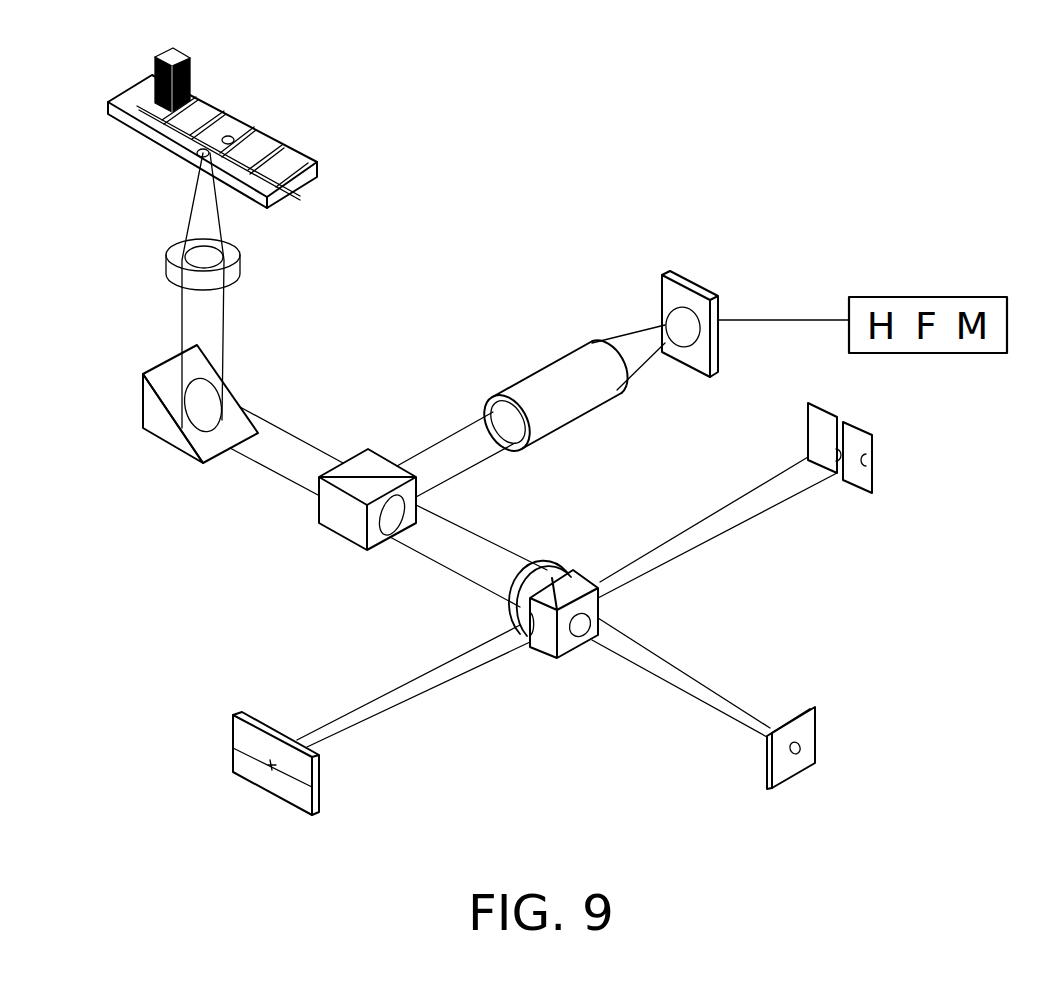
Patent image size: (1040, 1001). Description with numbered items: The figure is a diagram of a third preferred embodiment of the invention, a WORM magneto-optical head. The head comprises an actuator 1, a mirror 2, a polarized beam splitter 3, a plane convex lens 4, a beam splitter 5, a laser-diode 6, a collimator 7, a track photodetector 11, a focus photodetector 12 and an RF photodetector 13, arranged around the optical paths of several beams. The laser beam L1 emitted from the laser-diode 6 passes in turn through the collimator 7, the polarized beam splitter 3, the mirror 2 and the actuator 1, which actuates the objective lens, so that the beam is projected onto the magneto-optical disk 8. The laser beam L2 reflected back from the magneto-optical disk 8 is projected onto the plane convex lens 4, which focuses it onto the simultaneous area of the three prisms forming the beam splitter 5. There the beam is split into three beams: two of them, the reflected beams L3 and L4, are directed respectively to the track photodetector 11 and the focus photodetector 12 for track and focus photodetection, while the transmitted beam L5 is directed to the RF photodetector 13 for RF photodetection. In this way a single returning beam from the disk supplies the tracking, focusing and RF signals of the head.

The actuator 1 is at (175, 255).
The mirror 2 is at (150, 408).
The polarized beam splitter 3 is at (367, 462).
The plane convex lens 4 is at (548, 575).
The beam splitter 5 is at (548, 648).
The laser-diode 6 is at (708, 292).
The collimator 7 is at (548, 382).
The magneto-optical disk 8 is at (290, 147).
The track photodetector 11 is at (245, 738).
The focus photodetector 12 is at (873, 468).
The RF photodetector 13 is at (808, 747).
The laser beam L1 is at (643, 357).
The laser beam L2 is at (475, 562).
The reflected beam L3 is at (397, 690).
The reflected beam L4 is at (722, 522).
The transmitted beam L5 is at (688, 680).